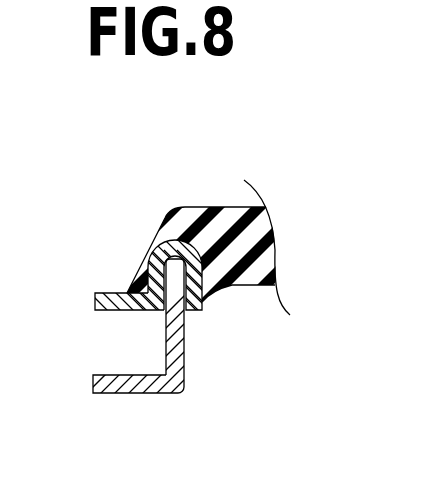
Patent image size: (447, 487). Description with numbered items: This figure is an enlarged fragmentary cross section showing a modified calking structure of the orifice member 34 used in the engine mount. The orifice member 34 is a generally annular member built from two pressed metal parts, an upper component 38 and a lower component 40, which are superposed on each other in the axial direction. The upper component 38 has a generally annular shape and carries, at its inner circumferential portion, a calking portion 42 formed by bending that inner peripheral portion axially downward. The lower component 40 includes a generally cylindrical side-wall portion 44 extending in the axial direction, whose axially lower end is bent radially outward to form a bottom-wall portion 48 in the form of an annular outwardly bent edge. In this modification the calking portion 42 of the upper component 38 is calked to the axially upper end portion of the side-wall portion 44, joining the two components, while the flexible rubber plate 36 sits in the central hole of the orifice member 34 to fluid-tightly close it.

The orifice member 34 is at (223, 243).
The flexible rubber plate 36 is at (262, 238).
The upper component 38 is at (104, 291).
The lower component 40 is at (243, 362).
The calking portion 42 is at (173, 250).
The side-wall portion 44 is at (178, 341).
The bottom-wall portion 48 is at (131, 389).